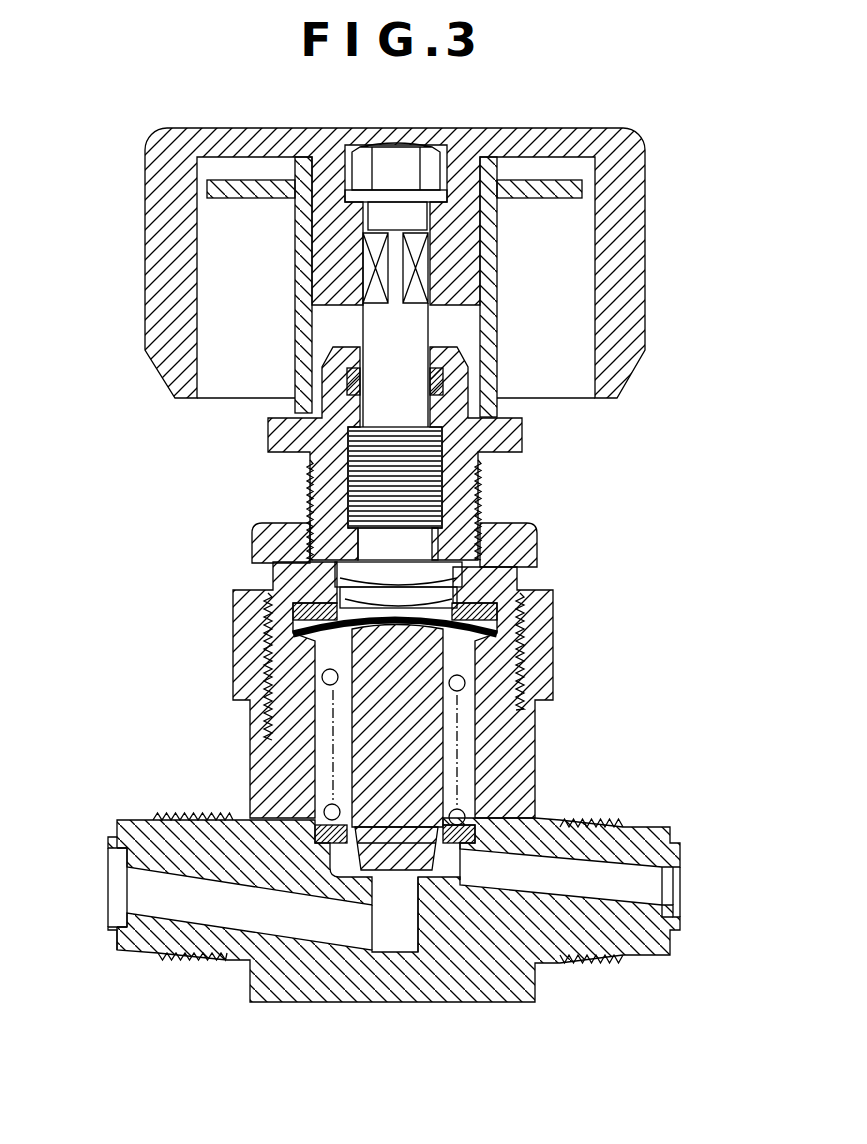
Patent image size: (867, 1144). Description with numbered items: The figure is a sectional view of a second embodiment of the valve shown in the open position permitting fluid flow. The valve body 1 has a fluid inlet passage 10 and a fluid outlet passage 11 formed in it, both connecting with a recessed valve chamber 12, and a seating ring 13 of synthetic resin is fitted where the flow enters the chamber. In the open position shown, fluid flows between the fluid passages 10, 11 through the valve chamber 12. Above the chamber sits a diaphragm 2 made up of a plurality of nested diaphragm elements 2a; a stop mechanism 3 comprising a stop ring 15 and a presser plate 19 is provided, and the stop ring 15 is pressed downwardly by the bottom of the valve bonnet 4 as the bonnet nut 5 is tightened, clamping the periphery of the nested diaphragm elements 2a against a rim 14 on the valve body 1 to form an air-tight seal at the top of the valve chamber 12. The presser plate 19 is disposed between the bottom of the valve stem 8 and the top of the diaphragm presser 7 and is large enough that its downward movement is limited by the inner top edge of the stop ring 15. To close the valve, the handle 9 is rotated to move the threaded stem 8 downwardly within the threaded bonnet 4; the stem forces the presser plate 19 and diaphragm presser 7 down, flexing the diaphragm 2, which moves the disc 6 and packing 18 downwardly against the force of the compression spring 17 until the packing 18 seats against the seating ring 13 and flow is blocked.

The valve body 1 is at (453, 960).
The diaphragm 2 is at (480, 645).
The nested diaphragm elements 2a is at (522, 621).
The stop mechanism 3 is at (319, 630).
The valve bonnet 4 is at (333, 540).
The bonnet nut 5 is at (273, 550).
The disc 6 is at (400, 733).
The diaphragm presser 7 is at (470, 601).
The valve stem 8 is at (430, 481).
The handle 9 is at (613, 312).
The fluid inlet passage 10 is at (147, 889).
The fluid outlet passage 11 is at (637, 888).
The valve chamber 12 is at (338, 762).
The seating ring 13 is at (372, 878).
The rim 14 is at (350, 640).
The stop ring 15 is at (297, 622).
The compression spring 17 is at (513, 788).
The packing 18 is at (400, 852).
The presser plate 19 is at (330, 590).